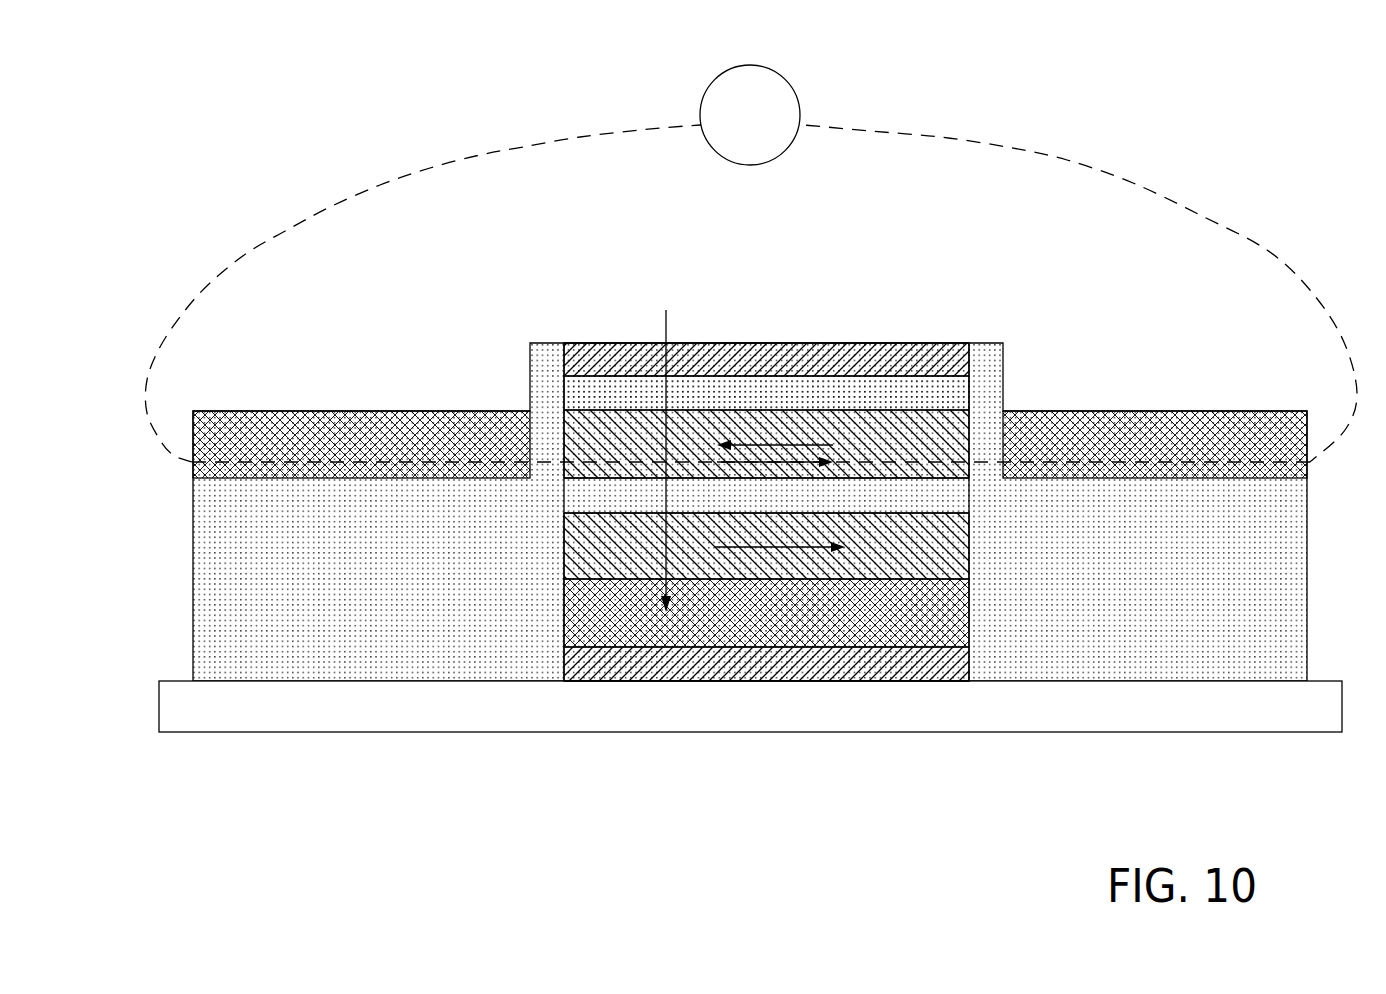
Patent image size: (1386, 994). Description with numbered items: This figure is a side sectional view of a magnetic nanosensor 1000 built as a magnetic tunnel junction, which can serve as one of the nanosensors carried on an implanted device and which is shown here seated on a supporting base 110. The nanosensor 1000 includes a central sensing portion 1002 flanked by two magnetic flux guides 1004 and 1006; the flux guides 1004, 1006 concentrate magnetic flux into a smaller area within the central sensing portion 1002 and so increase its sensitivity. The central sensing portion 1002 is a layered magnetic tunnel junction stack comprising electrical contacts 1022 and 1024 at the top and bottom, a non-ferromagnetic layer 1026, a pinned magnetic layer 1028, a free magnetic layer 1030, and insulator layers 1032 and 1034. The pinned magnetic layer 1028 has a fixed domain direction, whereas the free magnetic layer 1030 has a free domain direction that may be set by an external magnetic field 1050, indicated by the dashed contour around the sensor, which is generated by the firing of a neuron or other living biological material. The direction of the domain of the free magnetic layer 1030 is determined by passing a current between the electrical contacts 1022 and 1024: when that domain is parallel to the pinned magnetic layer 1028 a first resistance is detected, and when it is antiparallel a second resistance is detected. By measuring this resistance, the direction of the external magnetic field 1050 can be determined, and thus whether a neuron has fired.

The substrate 110 is at (1270, 718).
The magnetic nanosensor 1000 is at (1120, 310).
The central sensing portion 1002 is at (799, 280).
The magnetic flux guide 1004 is at (320, 382).
The magnetic flux guide 1006 is at (1180, 382).
The electrical contact 1022 is at (882, 347).
The electrical contact 1024 is at (910, 670).
The non-ferromagnetic layer 1026 is at (748, 633).
The pinned magnetic layer 1028 is at (952, 559).
The free magnetic layer 1030 is at (950, 448).
The insulator layer 1032 is at (930, 503).
The insulator layer 1034 is at (963, 392).
The external magnetic field 1050 is at (1032, 150).